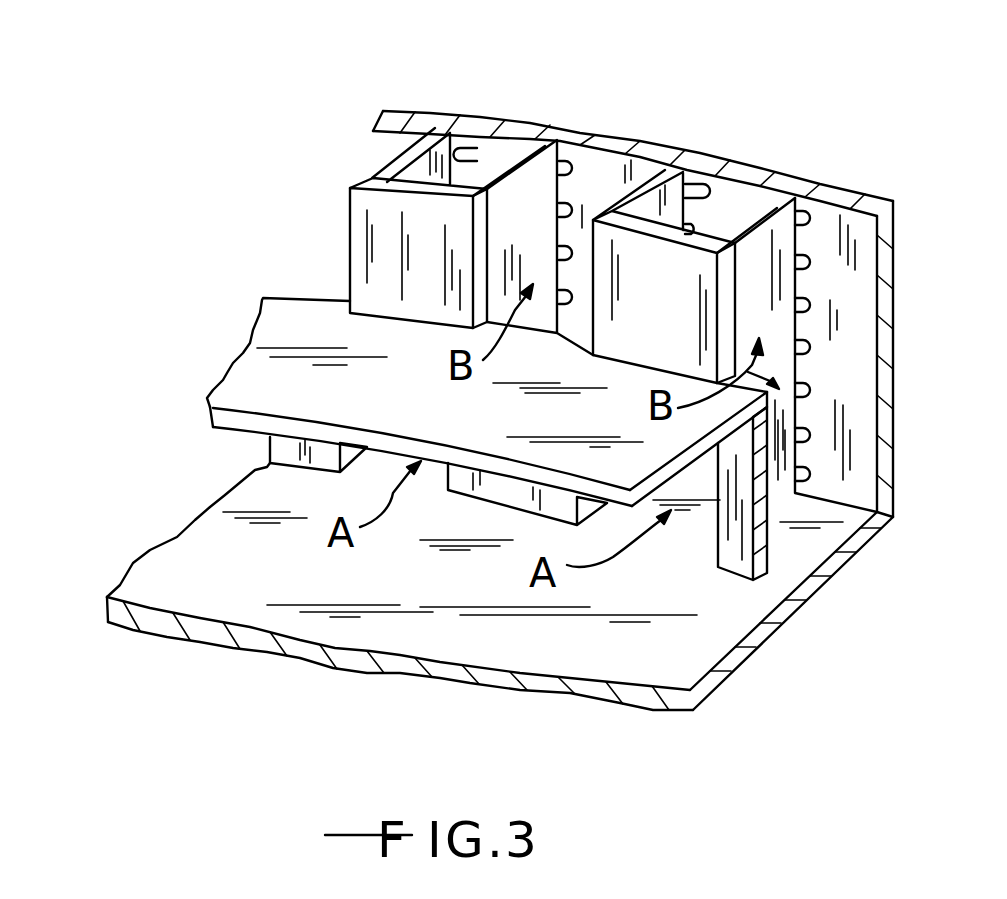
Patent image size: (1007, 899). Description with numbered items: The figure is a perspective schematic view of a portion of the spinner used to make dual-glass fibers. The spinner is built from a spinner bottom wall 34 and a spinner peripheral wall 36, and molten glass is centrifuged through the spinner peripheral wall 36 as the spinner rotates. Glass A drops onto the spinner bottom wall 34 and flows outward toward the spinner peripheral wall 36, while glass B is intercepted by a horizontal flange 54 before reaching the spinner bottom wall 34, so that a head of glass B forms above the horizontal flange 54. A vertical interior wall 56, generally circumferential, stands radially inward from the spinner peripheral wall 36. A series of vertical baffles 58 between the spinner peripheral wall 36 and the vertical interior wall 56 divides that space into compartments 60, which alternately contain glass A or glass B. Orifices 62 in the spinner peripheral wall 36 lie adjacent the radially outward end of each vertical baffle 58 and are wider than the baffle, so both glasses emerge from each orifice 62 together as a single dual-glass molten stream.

The spinner bottom wall 34 is at (773, 635).
The spinner peripheral wall 36 is at (895, 423).
The horizontal flange 54 is at (247, 423).
The vertical interior wall 56 is at (418, 183).
The vertical baffles 58 is at (503, 152).
The compartments 60 is at (727, 193).
The orifices 62 is at (812, 393).